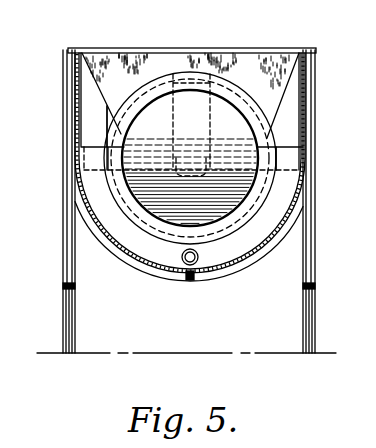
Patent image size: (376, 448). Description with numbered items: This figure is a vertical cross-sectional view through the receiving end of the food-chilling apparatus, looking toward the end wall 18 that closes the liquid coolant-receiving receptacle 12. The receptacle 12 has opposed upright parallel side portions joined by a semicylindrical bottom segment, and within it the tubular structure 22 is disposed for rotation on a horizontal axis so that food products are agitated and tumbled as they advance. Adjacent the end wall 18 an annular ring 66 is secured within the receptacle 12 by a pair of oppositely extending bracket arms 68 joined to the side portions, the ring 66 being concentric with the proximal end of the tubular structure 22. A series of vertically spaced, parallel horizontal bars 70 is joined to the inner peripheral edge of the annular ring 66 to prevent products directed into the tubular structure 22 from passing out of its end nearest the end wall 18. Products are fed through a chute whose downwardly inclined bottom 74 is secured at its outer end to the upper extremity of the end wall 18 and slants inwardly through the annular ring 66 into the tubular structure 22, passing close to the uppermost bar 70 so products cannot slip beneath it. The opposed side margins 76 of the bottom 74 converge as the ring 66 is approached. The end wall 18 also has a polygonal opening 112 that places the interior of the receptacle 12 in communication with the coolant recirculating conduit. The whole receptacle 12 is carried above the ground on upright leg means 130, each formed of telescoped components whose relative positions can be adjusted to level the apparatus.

The liquid coolant-receiving receptacle 12 is at (216, 286).
The end wall 18 is at (279, 213).
The tubular structure 22 is at (121, 216).
The annular ring 66 is at (238, 218).
The bracket arms 68 is at (107, 162).
The horizontal bars 70 is at (144, 214).
The chute bottom 74 is at (152, 62).
The side margins 76 is at (104, 108).
The polygonal opening 112 is at (174, 97).
The leg means 130 is at (81, 284).